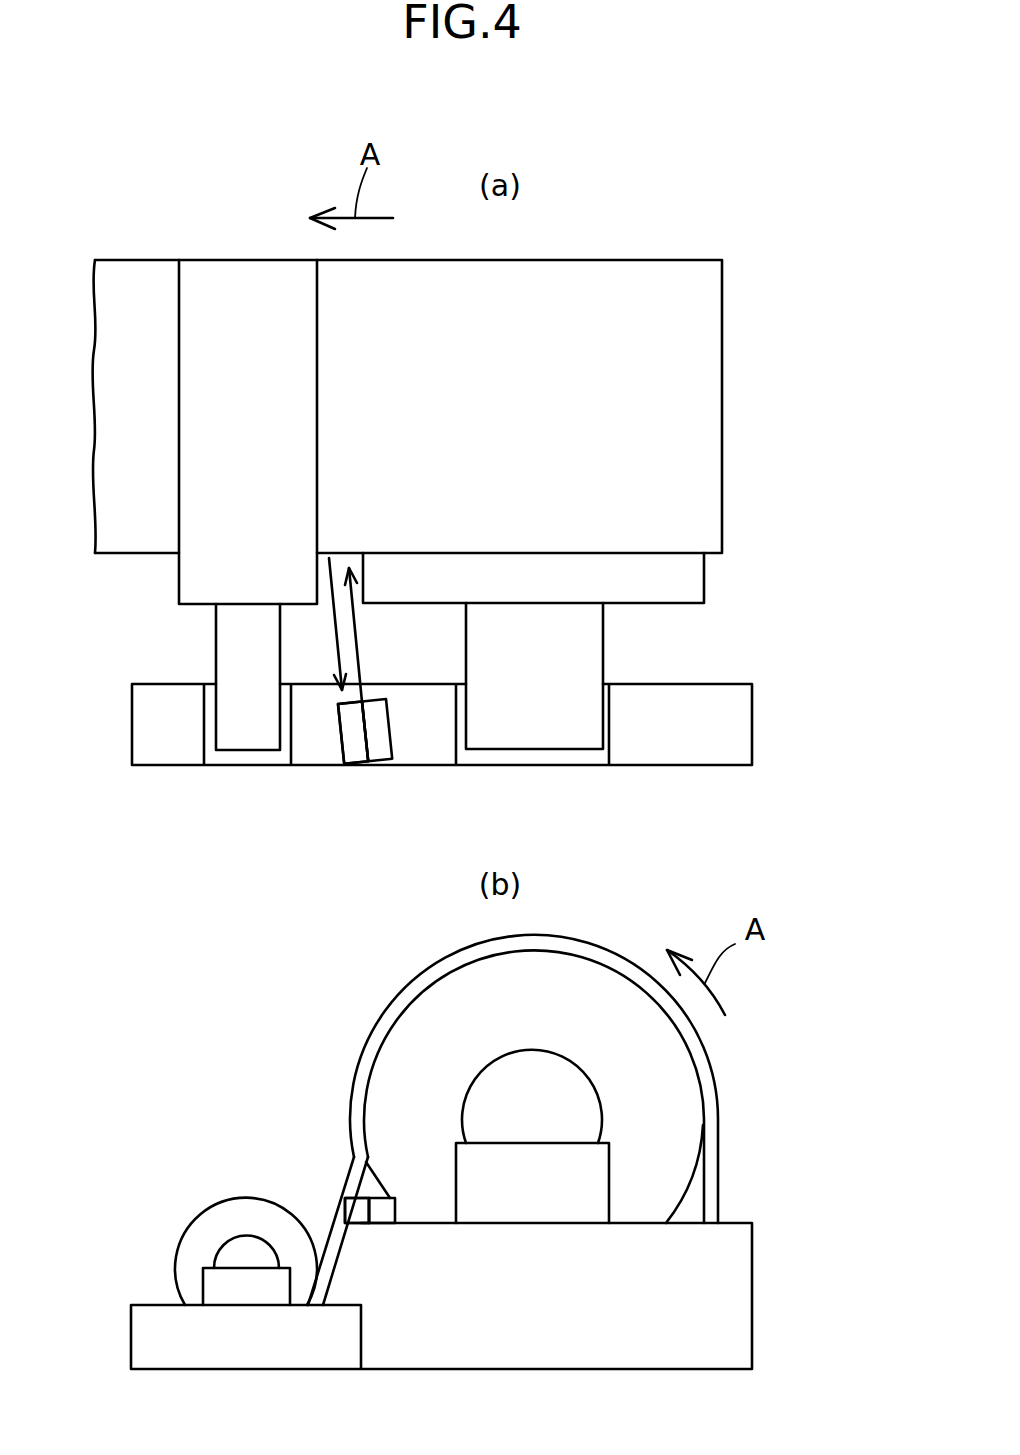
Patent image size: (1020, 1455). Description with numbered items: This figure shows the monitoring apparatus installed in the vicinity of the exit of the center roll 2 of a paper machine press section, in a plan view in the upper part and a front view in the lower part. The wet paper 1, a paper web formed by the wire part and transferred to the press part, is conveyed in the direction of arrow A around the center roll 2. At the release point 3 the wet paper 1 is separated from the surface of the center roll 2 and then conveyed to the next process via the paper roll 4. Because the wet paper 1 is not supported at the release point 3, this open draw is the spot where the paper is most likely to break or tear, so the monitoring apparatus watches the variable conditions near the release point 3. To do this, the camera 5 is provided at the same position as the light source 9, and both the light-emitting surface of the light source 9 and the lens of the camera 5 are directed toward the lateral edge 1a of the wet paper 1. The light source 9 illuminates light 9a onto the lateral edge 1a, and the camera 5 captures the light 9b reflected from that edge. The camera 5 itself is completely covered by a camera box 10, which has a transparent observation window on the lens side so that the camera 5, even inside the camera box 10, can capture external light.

The wet paper 1 is at (647, 302).
The lateral edge 1a is at (133, 557).
The center roll 2 is at (663, 583).
The release point 3 is at (353, 1157).
The paper roll 4 is at (242, 292).
The camera 5 is at (347, 745).
The light source 9 is at (385, 743).
The light 9a is at (357, 618).
The reflected light 9b is at (338, 643).
The camera box 10 is at (347, 745).